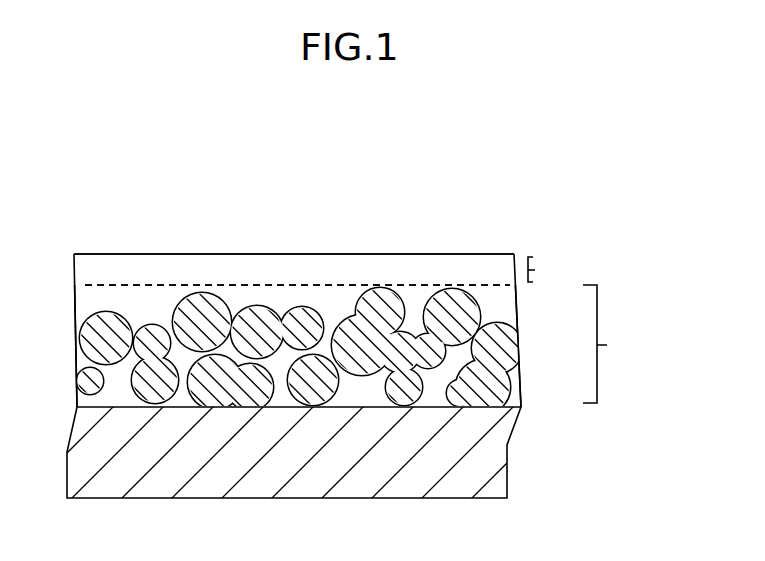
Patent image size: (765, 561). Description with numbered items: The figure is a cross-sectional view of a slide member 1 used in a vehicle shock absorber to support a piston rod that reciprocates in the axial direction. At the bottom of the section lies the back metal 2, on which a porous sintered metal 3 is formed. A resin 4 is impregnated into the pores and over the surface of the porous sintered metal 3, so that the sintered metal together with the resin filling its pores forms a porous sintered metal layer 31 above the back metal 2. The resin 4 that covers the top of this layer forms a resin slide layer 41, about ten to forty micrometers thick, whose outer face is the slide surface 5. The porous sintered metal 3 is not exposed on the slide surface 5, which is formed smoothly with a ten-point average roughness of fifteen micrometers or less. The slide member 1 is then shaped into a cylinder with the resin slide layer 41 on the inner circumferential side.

The slide member 1 is at (158, 187).
The back metal 2 is at (482, 456).
The porous sintered metal 3 is at (500, 337).
The porous sintered metal layer 31 is at (357, 346).
The resin 4 is at (304, 275).
The resin slide layer 41 is at (537, 263).
The slide surface 5 is at (410, 254).